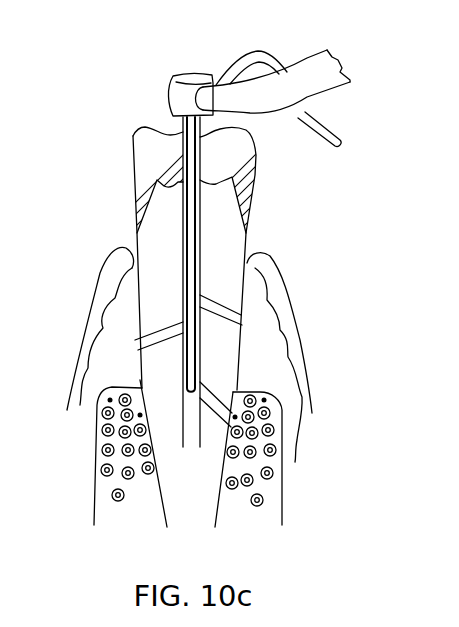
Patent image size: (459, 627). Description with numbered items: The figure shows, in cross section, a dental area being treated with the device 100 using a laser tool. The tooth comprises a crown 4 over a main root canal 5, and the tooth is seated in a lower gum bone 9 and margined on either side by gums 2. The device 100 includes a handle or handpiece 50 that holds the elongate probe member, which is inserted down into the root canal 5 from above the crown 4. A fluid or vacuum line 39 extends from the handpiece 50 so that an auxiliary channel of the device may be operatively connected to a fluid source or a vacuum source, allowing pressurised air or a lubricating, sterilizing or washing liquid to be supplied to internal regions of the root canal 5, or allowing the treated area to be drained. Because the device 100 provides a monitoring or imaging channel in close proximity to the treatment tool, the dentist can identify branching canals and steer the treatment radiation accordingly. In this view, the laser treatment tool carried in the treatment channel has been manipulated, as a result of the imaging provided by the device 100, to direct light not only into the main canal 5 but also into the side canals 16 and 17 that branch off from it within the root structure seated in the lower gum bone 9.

The device 100 is at (155, 99).
The handle or handpiece 50 is at (350, 68).
The fluid or vacuum line 39 is at (330, 130).
The crown 4 is at (140, 157).
The root canal 5 is at (182, 277).
The side canal 16 is at (222, 306).
The side canal 17 is at (210, 398).
The gums 2 is at (103, 292).
The lower gum bone 9 is at (108, 447).